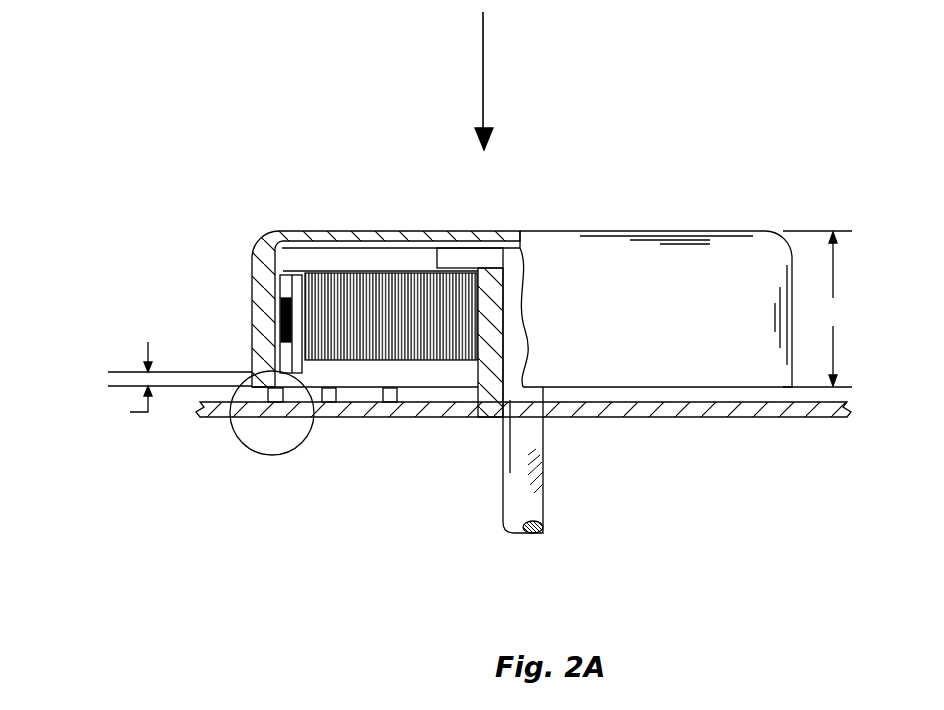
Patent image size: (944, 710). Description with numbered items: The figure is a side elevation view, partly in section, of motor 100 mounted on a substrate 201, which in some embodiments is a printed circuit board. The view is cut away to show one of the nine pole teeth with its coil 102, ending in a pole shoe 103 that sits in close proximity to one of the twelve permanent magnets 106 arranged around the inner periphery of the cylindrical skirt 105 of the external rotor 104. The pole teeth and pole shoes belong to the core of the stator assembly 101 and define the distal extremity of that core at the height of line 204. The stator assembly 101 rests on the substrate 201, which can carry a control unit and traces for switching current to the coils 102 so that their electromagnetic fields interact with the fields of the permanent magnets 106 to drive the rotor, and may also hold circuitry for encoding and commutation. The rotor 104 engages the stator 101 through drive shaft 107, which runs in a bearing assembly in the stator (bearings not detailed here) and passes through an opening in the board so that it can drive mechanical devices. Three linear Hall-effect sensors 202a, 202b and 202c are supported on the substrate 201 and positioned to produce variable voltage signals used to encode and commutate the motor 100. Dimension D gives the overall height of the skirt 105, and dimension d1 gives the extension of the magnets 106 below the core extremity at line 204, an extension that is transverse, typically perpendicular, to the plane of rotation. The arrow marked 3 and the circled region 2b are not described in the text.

The vibration direction 3 is at (478, 81).
The motor 100 is at (524, 166).
The stator assembly 101 is at (472, 376).
The coils 102 is at (371, 258).
The pole shoe 103 is at (284, 272).
The external rotor 104 is at (568, 218).
The cylindrical skirt 105 is at (297, 233).
The permanent magnets 106 is at (280, 305).
The drive shaft 107 is at (543, 468).
The substrate 201 is at (656, 418).
The linear Hall-effect sensor 202a is at (273, 403).
The linear Hall-effect sensor 202b is at (323, 403).
The linear Hall-effect sensor 202c is at (387, 403).
The line 204 is at (122, 372).
The detail region 2b is at (236, 442).
The dimension D is at (817, 309).
The dimension d1 is at (129, 384).